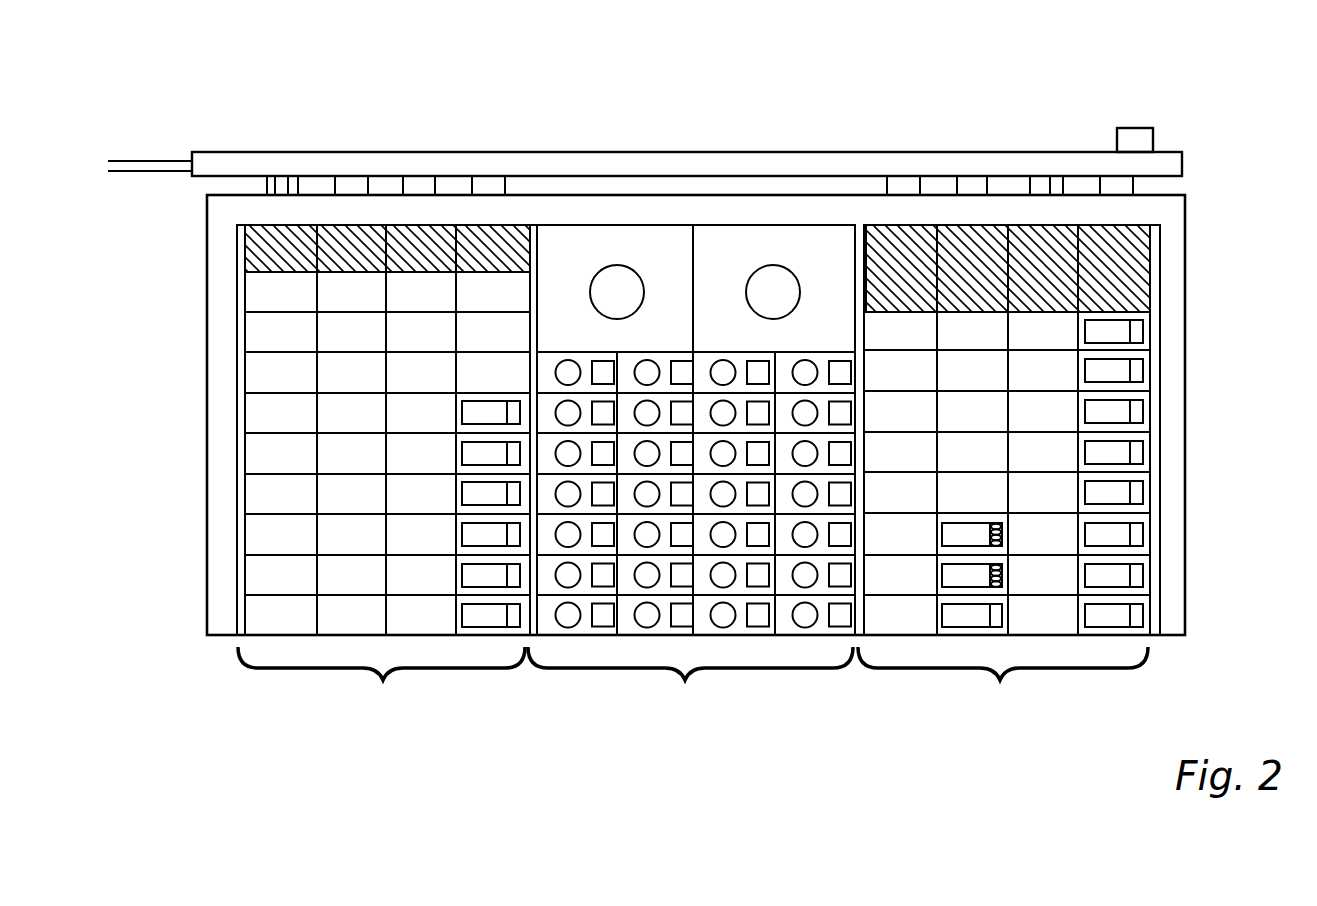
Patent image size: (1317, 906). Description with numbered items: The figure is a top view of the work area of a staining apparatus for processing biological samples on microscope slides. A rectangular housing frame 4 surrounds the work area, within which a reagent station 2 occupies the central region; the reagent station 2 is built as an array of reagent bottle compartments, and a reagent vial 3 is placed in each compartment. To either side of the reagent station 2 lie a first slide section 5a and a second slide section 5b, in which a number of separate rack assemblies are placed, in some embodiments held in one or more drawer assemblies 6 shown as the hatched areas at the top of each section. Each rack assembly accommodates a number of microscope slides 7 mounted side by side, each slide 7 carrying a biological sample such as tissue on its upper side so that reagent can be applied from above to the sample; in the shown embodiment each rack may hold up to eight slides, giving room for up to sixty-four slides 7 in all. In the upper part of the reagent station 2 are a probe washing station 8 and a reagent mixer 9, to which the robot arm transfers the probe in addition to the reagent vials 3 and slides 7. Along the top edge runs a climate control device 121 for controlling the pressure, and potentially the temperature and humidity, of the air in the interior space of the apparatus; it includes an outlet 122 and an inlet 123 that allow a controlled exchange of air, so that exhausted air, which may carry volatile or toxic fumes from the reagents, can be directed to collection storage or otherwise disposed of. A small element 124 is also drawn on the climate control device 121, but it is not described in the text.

The reagent station 2 is at (685, 680).
The reagent vial 3 is at (662, 355).
The housing frame 4 is at (383, 203).
The first slide section 5a is at (383, 680).
The second slide section 5b is at (1000, 680).
The drawer assembly 6 is at (495, 293).
The microscope slide 7 is at (1120, 332).
The probe washing station 8 is at (617, 275).
The reagent mixer 9 is at (777, 275).
The climate control device 121 is at (850, 165).
The outlet 122 is at (903, 182).
The inlet 123 is at (968, 182).
The bus bar connector 124 is at (1137, 140).